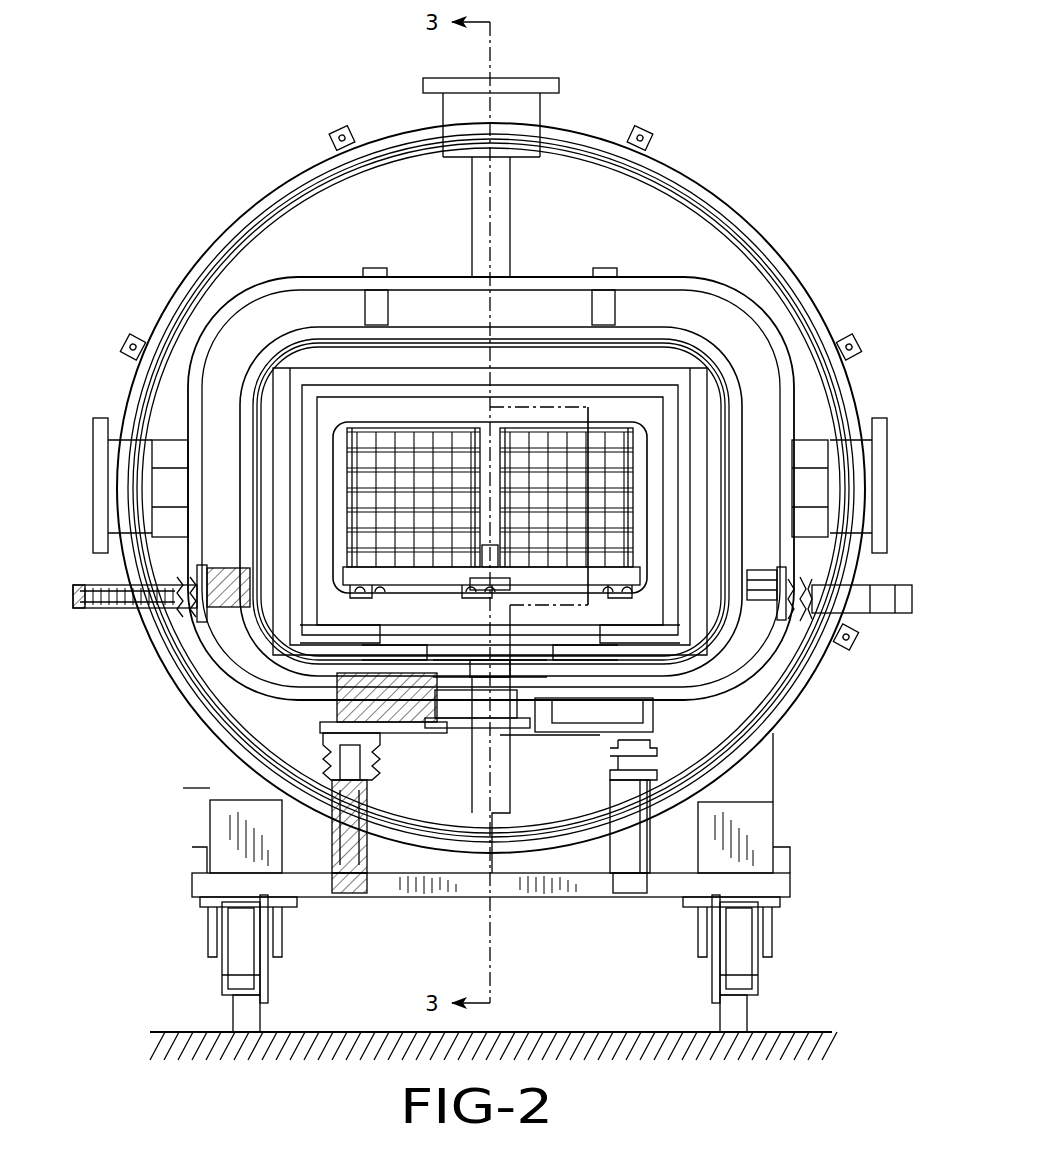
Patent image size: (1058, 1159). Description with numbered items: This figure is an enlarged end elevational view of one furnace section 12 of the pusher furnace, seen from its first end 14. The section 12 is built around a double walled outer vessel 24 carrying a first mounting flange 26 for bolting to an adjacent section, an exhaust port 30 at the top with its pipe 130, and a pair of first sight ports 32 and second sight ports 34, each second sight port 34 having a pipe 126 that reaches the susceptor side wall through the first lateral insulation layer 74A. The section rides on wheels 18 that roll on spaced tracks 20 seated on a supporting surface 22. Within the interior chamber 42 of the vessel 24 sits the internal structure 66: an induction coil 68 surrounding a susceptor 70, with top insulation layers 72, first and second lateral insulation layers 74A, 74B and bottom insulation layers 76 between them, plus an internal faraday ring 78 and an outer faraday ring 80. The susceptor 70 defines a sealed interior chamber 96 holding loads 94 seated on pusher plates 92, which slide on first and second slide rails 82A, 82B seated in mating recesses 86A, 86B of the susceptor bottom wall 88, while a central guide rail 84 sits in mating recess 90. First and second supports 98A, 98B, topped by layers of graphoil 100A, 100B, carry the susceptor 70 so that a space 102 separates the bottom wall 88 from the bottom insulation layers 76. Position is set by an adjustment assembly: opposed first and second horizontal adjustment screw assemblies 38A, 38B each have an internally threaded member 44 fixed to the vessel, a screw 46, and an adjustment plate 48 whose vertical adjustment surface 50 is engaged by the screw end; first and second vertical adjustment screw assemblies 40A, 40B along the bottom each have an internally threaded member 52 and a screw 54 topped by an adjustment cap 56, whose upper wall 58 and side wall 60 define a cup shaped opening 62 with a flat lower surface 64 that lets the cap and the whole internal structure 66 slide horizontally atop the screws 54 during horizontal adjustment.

The furnace section 12 is at (232, 192).
The first end 14 is at (695, 163).
The first mounting flange 26 is at (737, 203).
The first lateral insulation layer 74A is at (128, 332).
The second lateral insulation layer 74B is at (845, 332).
The exhaust port 30 is at (526, 76).
The pipe 130 is at (474, 194).
The internal structure 66 is at (707, 280).
The outer faraday ring 80 is at (338, 282).
The internal faraday ring 78 is at (298, 340).
The induction coil 68 is at (704, 343).
The susceptor 70 is at (635, 403).
The interior chamber 96 is at (446, 414).
The top insulation layers 72 is at (541, 358).
The load 94 is at (642, 519).
The pusher plate 92 is at (642, 572).
The guide rail 84 is at (496, 640).
The mating recess 90 is at (400, 672).
The space 102 is at (576, 716).
The bottom insulation layers 76 is at (533, 658).
The upper wall 58 is at (364, 724).
The side wall 60 is at (376, 741).
The cup shaped opening 62 is at (372, 754).
The screw 54 is at (363, 860).
The first vertical adjustment screw assembly 40A is at (351, 900).
The second vertical adjustment screw assembly 40B is at (621, 900).
The internally threaded member 52 is at (616, 795).
The adjustment cap 56 is at (606, 748).
The interior chamber 42 is at (531, 806).
The outer vessel 24 is at (451, 848).
The lower surface 64 is at (330, 790).
The wheels 18 is at (230, 941).
The tracks 20 is at (240, 1012).
The supporting surface 22 is at (325, 1031).
The second sight port 34 is at (95, 417).
The first sight port 32 is at (886, 417).
The pipe 126 is at (172, 481).
The screw 46 is at (121, 607).
The internally threaded member 44 is at (134, 612).
The first horizontal adjustment screw assembly 38A is at (104, 614).
The second horizontal adjustment screw assembly 38B is at (883, 619).
The adjustment plate 48 is at (204, 580).
The adjustment surface 50 is at (190, 574).
The bottom wall 88 is at (300, 612).
The first slide rail 82A is at (362, 598).
The first mating recess 86A is at (378, 598).
The first layer of graphoil 100A is at (470, 598).
The first support 98A is at (490, 598).
The second slide rail 82B is at (620, 598).
The second mating recess 86B is at (635, 600).
The second layer of graphoil 100B is at (650, 605).
The second support 98B is at (605, 605).